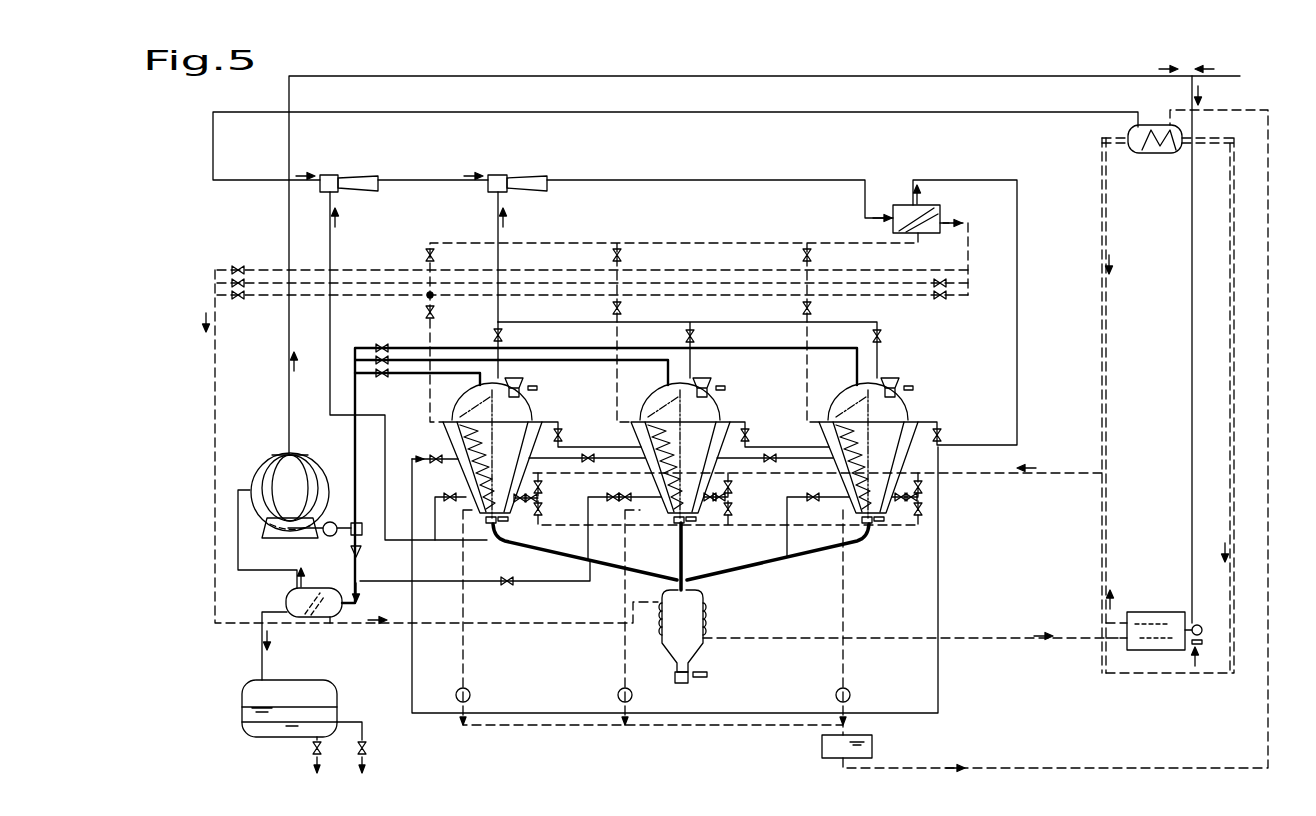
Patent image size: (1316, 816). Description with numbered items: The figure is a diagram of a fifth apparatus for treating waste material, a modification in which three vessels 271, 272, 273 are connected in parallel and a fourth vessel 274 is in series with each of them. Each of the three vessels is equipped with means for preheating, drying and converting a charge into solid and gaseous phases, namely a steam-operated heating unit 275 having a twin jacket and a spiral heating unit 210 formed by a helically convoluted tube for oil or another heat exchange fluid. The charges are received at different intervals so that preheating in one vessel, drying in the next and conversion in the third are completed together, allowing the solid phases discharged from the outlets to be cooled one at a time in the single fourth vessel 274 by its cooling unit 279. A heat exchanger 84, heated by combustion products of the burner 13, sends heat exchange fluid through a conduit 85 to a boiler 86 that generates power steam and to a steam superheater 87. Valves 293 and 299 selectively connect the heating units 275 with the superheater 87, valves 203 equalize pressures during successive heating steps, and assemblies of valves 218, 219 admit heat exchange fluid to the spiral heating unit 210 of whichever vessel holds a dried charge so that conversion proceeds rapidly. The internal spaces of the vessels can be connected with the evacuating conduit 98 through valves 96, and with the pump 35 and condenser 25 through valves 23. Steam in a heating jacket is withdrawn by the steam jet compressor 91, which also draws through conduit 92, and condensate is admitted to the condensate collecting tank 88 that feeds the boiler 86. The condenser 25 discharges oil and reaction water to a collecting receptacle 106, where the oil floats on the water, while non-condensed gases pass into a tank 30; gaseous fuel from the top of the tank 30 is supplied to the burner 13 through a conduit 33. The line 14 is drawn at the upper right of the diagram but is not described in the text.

The burner 13 is at (1203, 628).
The feed line 14 is at (1231, 340).
The valve 23 is at (378, 375).
The condenser 25 is at (323, 588).
The tank 30 is at (270, 450).
The conduit 33 is at (935, 75).
The pump 35 is at (362, 553).
The heat exchanger 84 is at (1150, 612).
The conduit 85 is at (1108, 505).
The boiler 86 is at (1156, 153).
The steam superheater 87 is at (901, 205).
The condensate collecting tank 88 is at (820, 748).
The steam jet compressor 91 is at (361, 177).
The conduit 92 is at (527, 177).
The valve 96 is at (495, 335).
The evacuating conduit 98 is at (503, 203).
The collecting receptacle 106 is at (330, 682).
The valve 203 is at (412, 459).
The spiral heating unit 210 is at (461, 466).
The valve 218 is at (524, 520).
The valve 219 is at (403, 307).
The vessel 271 is at (456, 400).
The vessel 272 is at (642, 397).
The vessel 273 is at (828, 388).
The fourth vessel 274 is at (690, 601).
The steam-operated heating unit 275 is at (450, 430).
The cooling unit 279 is at (657, 630).
The valve 293 is at (444, 505).
The valve 299 is at (562, 435).